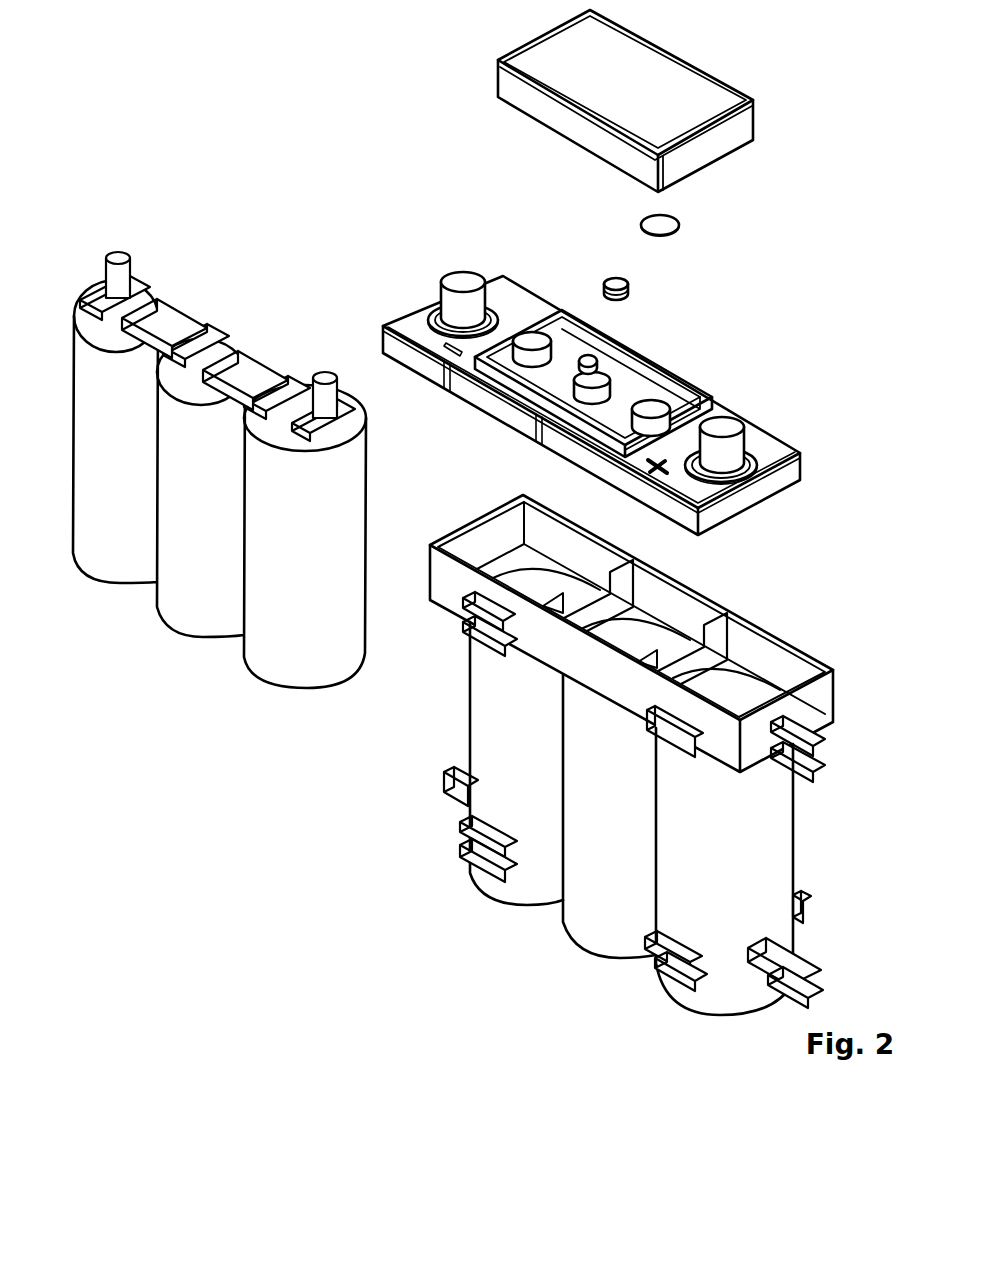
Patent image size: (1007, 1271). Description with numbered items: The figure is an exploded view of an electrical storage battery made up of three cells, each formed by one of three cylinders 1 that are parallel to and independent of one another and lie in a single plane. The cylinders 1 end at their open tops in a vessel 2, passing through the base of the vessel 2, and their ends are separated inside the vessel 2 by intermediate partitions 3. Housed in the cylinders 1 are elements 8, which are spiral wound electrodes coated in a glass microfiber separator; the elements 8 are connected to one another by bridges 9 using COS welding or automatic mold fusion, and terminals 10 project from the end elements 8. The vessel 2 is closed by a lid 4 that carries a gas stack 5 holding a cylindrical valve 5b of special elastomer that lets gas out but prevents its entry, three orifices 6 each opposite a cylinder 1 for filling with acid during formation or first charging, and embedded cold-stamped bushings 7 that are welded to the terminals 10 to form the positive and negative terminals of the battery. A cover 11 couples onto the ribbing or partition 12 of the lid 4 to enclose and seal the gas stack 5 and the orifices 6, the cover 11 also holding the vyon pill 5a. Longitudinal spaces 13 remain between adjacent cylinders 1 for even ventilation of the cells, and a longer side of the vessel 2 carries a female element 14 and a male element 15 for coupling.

The cylinders 1 is at (467, 878).
The vessel 2 is at (827, 698).
The intermediate partitions 3 is at (637, 583).
The lid 4 is at (763, 427).
The gas stack 5 is at (596, 358).
The vyon pill 5a is at (680, 229).
The cylindrical valve 5b is at (613, 275).
The orifices 6 is at (531, 334).
The cold-stamped bushings 7 is at (462, 264).
The elements 8 is at (283, 689).
The bridges 9 is at (178, 316).
The terminals 10 is at (112, 252).
The cover 11 is at (688, 48).
The ribbing or partition 12 is at (668, 362).
The longitudinal spaces 13 is at (558, 906).
The female element 14 is at (472, 628).
The male element 15 is at (654, 733).